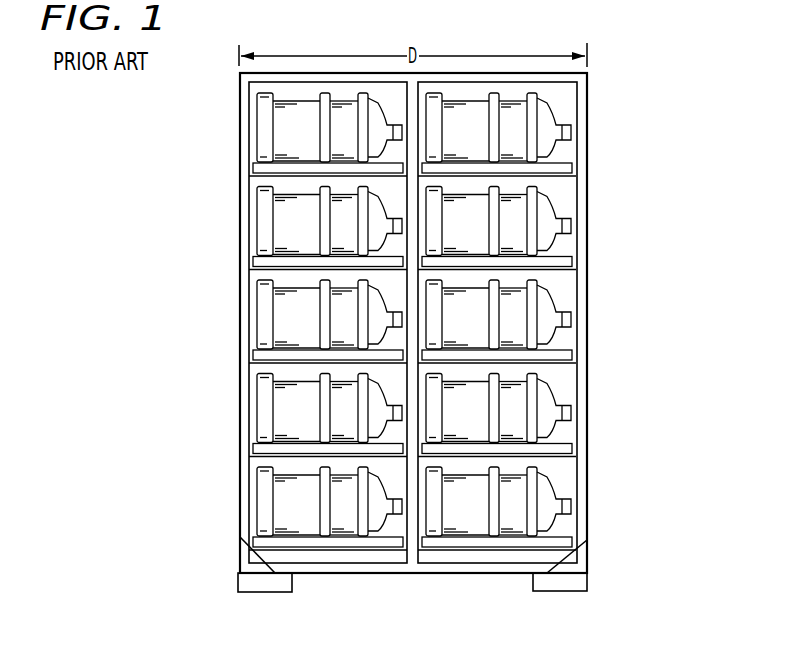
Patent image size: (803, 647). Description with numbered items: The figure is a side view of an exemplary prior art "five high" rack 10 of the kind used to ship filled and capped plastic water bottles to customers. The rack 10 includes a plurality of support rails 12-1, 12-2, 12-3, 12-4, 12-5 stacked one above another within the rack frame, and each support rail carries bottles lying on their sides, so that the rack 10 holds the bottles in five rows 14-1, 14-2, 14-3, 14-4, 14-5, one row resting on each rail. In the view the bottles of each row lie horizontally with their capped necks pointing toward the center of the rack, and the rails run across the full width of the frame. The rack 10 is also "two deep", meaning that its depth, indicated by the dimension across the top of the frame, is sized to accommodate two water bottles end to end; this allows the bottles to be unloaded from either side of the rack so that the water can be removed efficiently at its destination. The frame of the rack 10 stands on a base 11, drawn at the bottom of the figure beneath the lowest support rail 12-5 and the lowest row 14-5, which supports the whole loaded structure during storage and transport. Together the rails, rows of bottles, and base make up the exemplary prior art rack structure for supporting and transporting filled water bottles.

The rack 10 is at (658, 70).
The base 11 is at (340, 555).
The support rail 12-1 is at (558, 167).
The support rail 12-2 is at (558, 260).
The support rail 12-3 is at (558, 354).
The support rail 12-4 is at (558, 448).
The support rail 12-5 is at (558, 541).
The row 14-1 is at (212, 129).
The row 14-2 is at (212, 222).
The row 14-3 is at (212, 316).
The row 14-4 is at (212, 410).
The row 14-5 is at (212, 503).